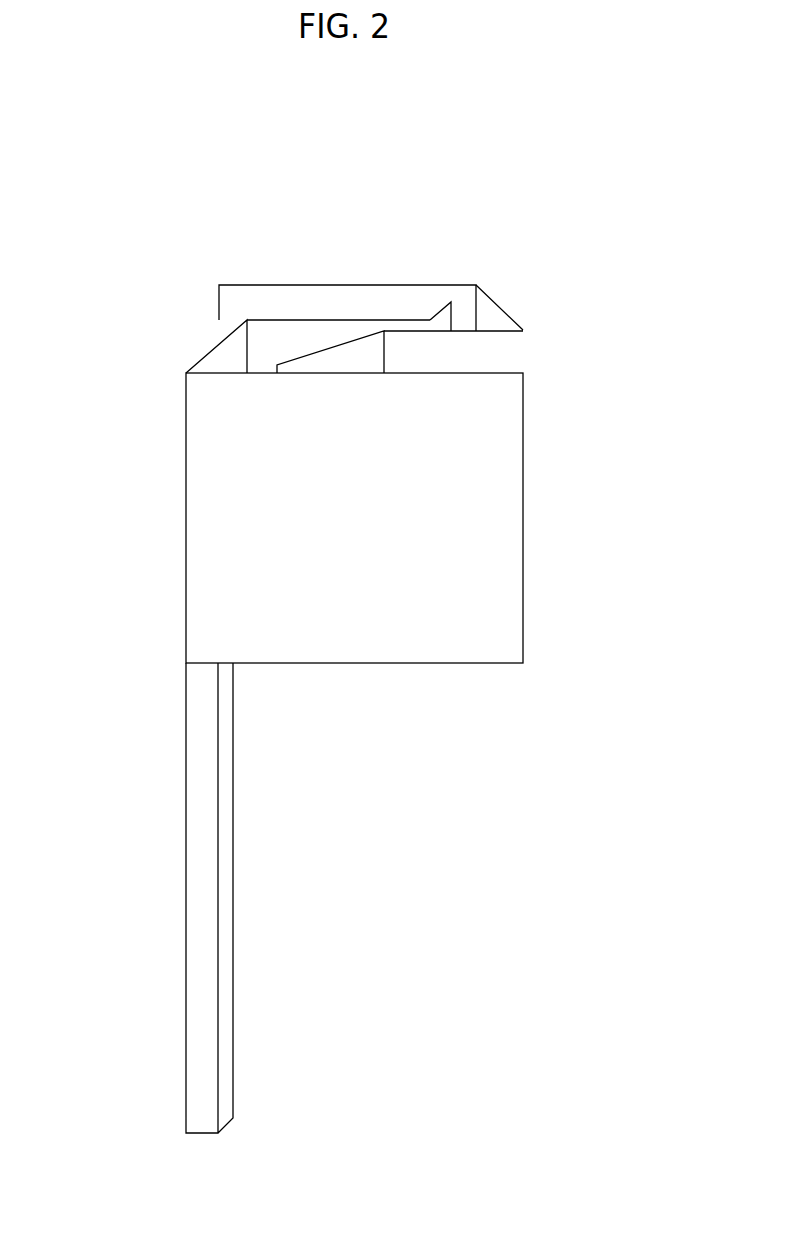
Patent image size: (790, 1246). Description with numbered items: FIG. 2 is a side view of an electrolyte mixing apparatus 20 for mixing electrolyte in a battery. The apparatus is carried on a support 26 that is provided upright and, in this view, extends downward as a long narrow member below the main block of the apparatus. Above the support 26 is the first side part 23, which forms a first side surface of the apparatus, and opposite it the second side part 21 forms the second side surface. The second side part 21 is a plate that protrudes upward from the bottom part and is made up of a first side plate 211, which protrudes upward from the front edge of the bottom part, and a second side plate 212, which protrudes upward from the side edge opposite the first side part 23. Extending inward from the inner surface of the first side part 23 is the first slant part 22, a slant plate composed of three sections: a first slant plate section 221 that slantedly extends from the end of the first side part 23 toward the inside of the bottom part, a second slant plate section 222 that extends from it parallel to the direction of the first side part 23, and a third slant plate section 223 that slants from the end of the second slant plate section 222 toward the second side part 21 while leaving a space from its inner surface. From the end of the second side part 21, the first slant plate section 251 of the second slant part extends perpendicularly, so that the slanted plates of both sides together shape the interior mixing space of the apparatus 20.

The electrolyte mixing apparatus 20 is at (182, 180).
The second side part 21 is at (500, 265).
The first side plate 211 is at (495, 300).
The second side plate 212 is at (377, 285).
The first slant part 22 is at (215, 320).
The first slant plate section 221 is at (210, 352).
The second slant plate section 222 is at (277, 319).
The third slant plate section 223 is at (436, 314).
The first side part 23 is at (437, 642).
The first slant plate section 251 is at (332, 345).
The support 26 is at (233, 928).